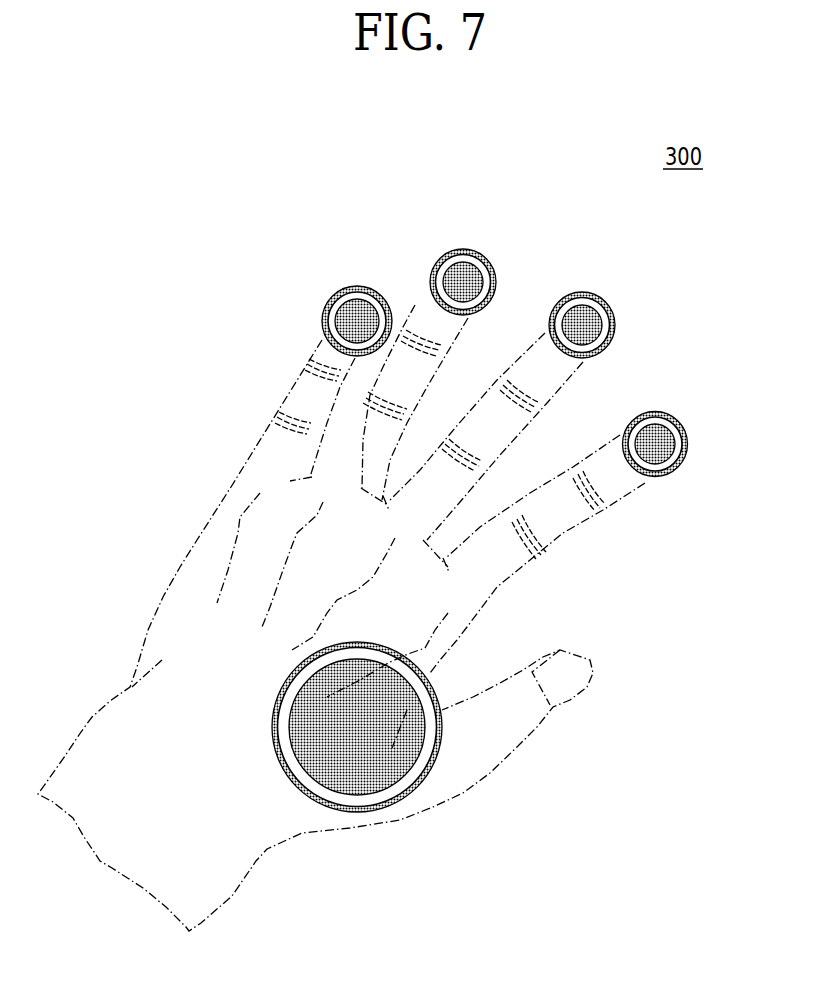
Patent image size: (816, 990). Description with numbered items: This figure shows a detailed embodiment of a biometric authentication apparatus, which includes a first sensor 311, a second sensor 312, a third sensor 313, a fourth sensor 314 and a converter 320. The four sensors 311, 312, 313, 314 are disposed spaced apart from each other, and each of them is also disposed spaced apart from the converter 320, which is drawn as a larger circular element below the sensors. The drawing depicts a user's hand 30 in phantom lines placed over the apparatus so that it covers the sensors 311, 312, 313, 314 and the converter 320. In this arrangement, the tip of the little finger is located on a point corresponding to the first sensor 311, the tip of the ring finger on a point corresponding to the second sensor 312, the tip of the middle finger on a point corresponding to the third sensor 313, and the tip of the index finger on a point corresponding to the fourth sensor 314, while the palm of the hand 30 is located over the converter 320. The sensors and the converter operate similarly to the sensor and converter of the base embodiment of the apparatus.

The hand 30 is at (142, 868).
The first sensor 311 is at (355, 299).
The second sensor 312 is at (462, 261).
The third sensor 313 is at (583, 304).
The fourth sensor 314 is at (657, 424).
The converter 320 is at (353, 786).